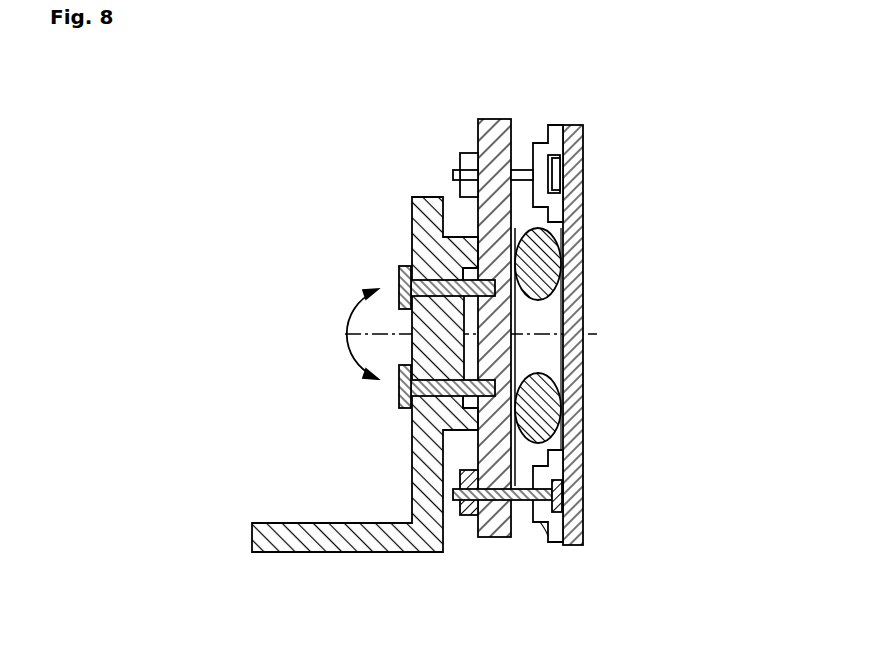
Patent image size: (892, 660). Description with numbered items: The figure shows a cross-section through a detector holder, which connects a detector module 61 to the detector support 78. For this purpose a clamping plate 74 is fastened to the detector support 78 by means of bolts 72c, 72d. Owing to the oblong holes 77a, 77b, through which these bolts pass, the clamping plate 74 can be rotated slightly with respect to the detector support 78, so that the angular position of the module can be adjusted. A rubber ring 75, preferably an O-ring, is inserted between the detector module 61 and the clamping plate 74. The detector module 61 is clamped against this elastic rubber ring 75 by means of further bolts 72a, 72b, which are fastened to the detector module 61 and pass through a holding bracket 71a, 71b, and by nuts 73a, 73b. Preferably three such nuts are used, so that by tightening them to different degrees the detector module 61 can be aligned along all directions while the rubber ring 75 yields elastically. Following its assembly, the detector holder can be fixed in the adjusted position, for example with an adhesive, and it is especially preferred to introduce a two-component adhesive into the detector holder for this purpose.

The detector module 61 is at (573, 322).
The holding bracket 71a is at (553, 528).
The holding bracket 71b is at (543, 148).
The bolt 72a is at (562, 478).
The bolt 72b is at (555, 178).
The bolt 72c is at (400, 393).
The bolt 72d is at (410, 290).
The nut 73a is at (461, 516).
The nut 73b is at (468, 158).
The clamping plate 74 is at (497, 537).
The rubber ring 75 is at (552, 412).
The oblong hole 77a is at (413, 413).
The oblong hole 77b is at (412, 258).
The detector support 78 is at (422, 515).